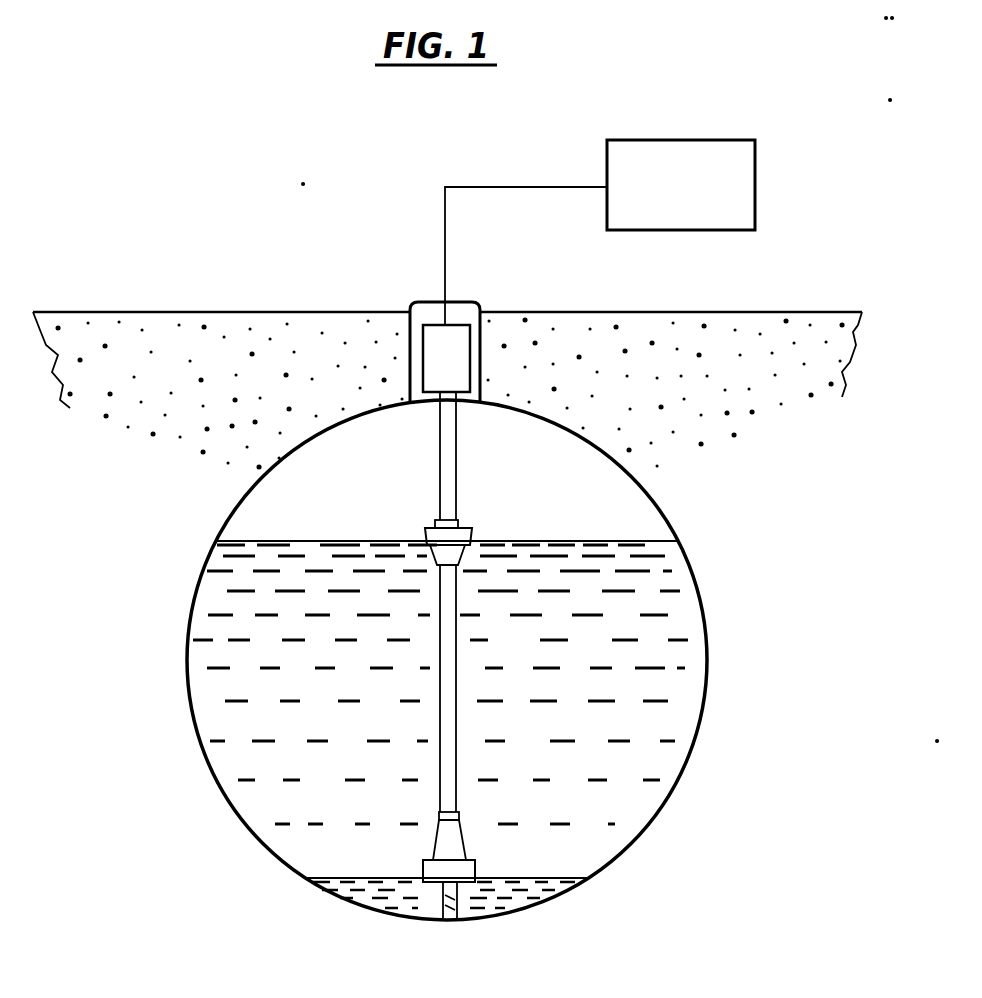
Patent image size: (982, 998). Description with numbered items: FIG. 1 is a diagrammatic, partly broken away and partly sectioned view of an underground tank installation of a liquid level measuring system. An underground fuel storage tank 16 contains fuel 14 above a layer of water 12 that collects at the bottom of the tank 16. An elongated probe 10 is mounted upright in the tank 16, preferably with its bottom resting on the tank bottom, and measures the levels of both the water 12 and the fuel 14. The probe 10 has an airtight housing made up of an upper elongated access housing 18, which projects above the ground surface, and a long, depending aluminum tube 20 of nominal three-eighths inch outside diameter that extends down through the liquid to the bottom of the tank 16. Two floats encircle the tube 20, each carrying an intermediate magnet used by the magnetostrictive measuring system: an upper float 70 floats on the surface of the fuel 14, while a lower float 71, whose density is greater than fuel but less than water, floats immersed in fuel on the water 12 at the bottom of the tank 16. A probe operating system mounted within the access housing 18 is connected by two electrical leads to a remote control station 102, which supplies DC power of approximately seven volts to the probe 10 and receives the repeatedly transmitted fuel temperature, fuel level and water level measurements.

The remote control station 102 is at (755, 167).
The upper elongated access housing 18 is at (455, 340).
The elongated probe 10 is at (489, 655).
The upper float 70 is at (462, 540).
The underground fuel storage tank 16 is at (662, 521).
The fuel 14 is at (683, 719).
The aluminum tube 20 is at (448, 748).
The lower float 71 is at (468, 872).
The water 12 is at (555, 888).